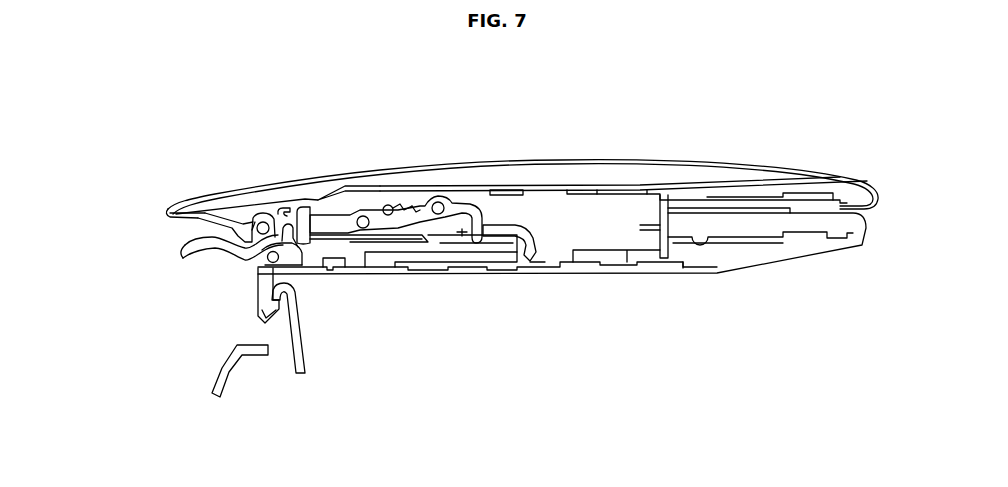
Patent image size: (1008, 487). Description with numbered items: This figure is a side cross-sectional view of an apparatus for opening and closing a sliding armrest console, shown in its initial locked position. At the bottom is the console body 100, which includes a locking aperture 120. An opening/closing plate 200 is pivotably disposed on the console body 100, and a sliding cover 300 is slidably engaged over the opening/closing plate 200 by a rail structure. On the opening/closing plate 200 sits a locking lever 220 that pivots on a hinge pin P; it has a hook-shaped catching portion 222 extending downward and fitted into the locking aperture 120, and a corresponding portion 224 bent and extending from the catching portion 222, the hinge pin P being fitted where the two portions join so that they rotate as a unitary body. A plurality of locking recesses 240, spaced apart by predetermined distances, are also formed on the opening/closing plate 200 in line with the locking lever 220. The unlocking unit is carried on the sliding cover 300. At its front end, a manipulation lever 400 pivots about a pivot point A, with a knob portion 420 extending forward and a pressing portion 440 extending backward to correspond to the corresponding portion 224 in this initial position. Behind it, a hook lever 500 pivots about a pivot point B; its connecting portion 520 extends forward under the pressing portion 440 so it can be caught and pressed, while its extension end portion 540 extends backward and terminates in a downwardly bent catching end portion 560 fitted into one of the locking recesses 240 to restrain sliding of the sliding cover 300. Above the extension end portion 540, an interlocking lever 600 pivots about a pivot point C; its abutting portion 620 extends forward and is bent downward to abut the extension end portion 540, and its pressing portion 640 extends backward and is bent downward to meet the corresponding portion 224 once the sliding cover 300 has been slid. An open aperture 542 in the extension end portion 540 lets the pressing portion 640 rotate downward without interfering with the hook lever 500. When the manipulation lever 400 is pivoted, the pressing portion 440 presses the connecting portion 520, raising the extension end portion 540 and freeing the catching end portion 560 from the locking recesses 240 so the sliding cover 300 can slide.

The console body 100 is at (294, 362).
The locking aperture 120 is at (263, 335).
The opening/closing plate 200 is at (500, 265).
The locking lever 220 is at (152, 330).
The catching portion 222 is at (258, 289).
The corresponding portion 224 is at (262, 262).
The locking recesses 240 is at (352, 270).
The sliding cover 300 is at (637, 168).
The manipulation lever 400 is at (181, 246).
The knob portion 420 is at (200, 213).
The pressing portion 440 is at (290, 224).
The hook lever 500 is at (376, 247).
The connecting portion 520 is at (318, 214).
The extension end portion 540 is at (393, 201).
The open aperture 542 is at (462, 238).
The catching end portion 560 is at (537, 220).
The interlocking lever 600 is at (432, 228).
The abutting portion 620 is at (415, 208).
The pressing portion 640 is at (478, 215).
The pivot point A is at (258, 220).
The pivot point B is at (368, 203).
The pivot point C is at (441, 202).
The hinge pin P is at (290, 266).